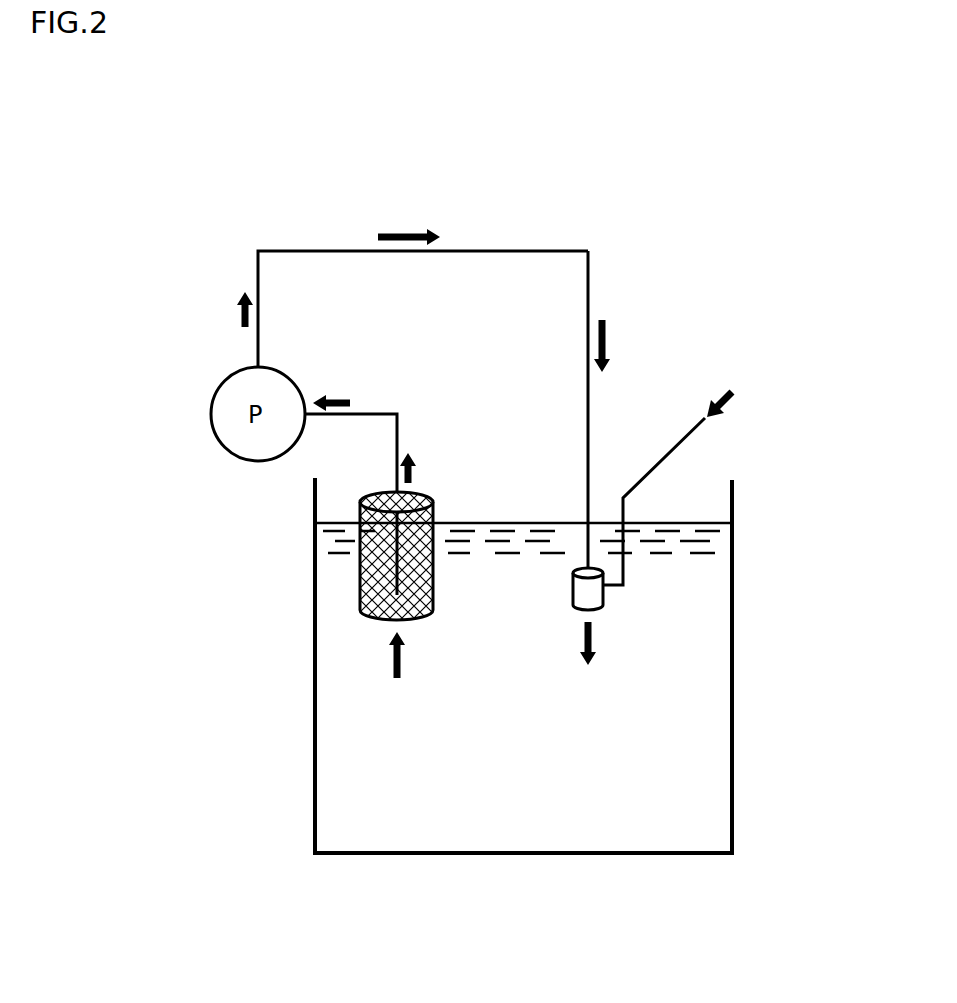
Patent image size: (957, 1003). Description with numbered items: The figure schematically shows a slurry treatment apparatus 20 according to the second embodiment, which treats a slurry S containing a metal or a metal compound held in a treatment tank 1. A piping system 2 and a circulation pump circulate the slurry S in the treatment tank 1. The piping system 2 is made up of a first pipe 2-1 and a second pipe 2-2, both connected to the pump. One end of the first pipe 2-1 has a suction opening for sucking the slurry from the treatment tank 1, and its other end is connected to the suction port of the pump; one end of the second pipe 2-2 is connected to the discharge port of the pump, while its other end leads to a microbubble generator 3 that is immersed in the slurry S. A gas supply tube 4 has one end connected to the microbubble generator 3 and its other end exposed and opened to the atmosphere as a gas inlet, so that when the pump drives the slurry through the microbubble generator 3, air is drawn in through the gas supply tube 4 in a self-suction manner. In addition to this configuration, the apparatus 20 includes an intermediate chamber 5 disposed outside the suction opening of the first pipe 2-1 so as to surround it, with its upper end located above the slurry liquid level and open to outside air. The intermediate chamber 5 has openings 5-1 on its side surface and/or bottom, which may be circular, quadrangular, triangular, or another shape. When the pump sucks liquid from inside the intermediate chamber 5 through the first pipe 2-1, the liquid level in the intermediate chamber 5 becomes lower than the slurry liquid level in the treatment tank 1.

The treatment tank 1 is at (733, 645).
The piping system 2 is at (423, 377).
The first pipe 2-1 is at (398, 432).
The second pipe 2-2 is at (317, 251).
The microbubble generator 3 is at (577, 595).
The gas supply tube 4 is at (660, 460).
The intermediate chamber 5 is at (393, 585).
The openings 5-1 is at (433, 585).
The slurry treatment apparatus 20 is at (653, 190).
The slurry S is at (698, 585).
The gas G is at (731, 389).